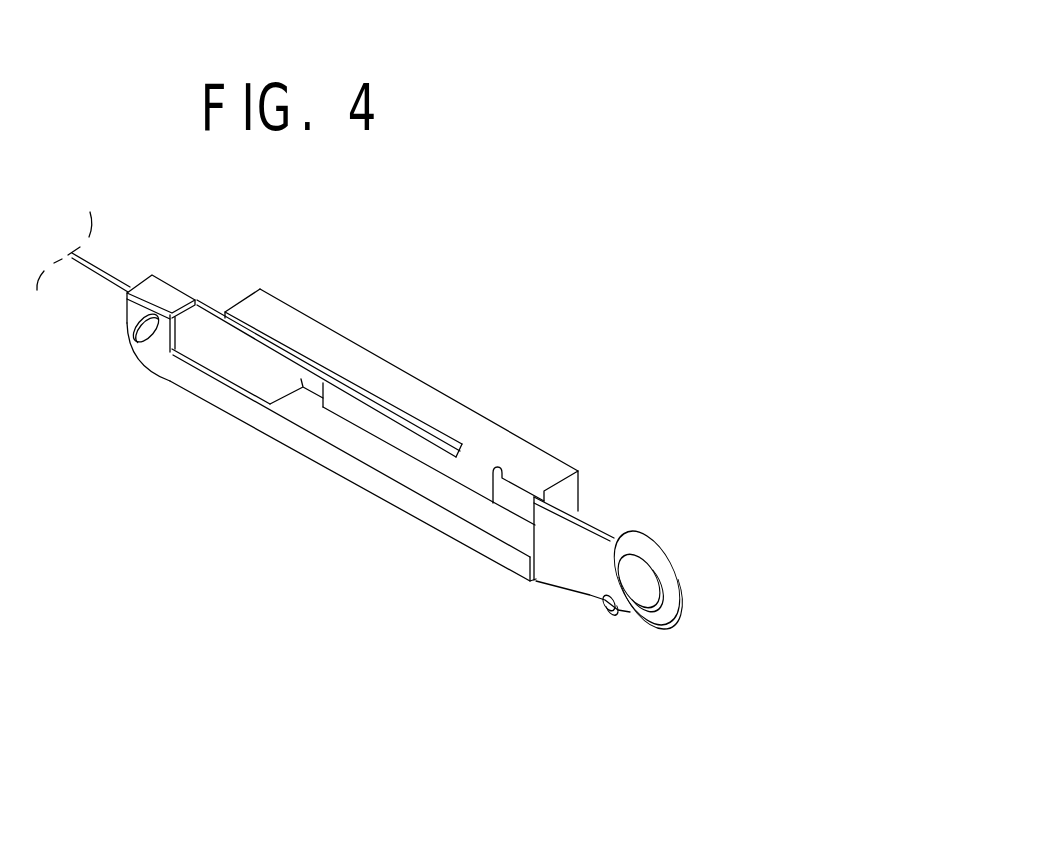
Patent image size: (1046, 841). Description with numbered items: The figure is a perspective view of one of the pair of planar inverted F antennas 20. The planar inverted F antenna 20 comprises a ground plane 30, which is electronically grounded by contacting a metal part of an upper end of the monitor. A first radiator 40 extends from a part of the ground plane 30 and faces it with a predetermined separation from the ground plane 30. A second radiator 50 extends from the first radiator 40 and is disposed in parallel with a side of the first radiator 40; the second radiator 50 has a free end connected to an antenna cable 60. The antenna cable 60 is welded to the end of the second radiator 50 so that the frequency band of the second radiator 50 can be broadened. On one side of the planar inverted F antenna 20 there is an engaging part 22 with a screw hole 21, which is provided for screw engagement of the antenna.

The planar inverted F antenna 20 is at (681, 166).
The screw hole 21 is at (647, 582).
The engaging part 22 is at (590, 542).
The ground plane 30 is at (402, 498).
The first radiator 40 is at (392, 374).
The second radiator 50 is at (367, 422).
The antenna cable 60 is at (228, 345).